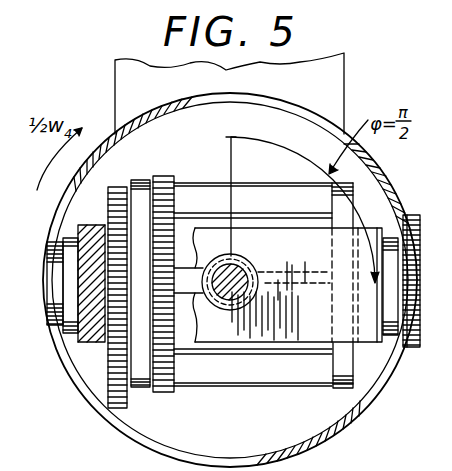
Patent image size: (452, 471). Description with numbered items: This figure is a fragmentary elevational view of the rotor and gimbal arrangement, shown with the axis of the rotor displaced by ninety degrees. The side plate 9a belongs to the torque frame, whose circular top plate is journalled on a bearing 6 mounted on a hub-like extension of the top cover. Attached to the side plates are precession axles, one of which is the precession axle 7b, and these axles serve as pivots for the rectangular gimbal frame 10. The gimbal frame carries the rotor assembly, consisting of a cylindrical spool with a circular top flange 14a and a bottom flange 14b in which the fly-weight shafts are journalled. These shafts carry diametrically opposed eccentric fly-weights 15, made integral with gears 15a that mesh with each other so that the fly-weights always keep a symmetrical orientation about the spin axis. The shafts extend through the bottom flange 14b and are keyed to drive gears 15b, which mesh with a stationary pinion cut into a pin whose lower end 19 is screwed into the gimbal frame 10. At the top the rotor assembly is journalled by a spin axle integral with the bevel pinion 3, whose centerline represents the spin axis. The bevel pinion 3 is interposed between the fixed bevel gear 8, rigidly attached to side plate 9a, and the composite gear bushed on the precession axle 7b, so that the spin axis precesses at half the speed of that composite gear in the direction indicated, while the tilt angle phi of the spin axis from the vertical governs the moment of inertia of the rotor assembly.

The bevel pinion 3 is at (408, 213).
The bearing 6 is at (253, 160).
The precession axle 7b is at (246, 267).
The bevel gear 8 is at (152, 110).
The side plate 9a is at (348, 72).
The gimbal frame 10 is at (353, 372).
The top flange 14a is at (372, 343).
The bottom flange 14b is at (142, 182).
The fly-weight 15 is at (212, 222).
The gear 15a is at (168, 393).
The drive gear 15b is at (110, 372).
The lower end of pin 19 is at (52, 300).